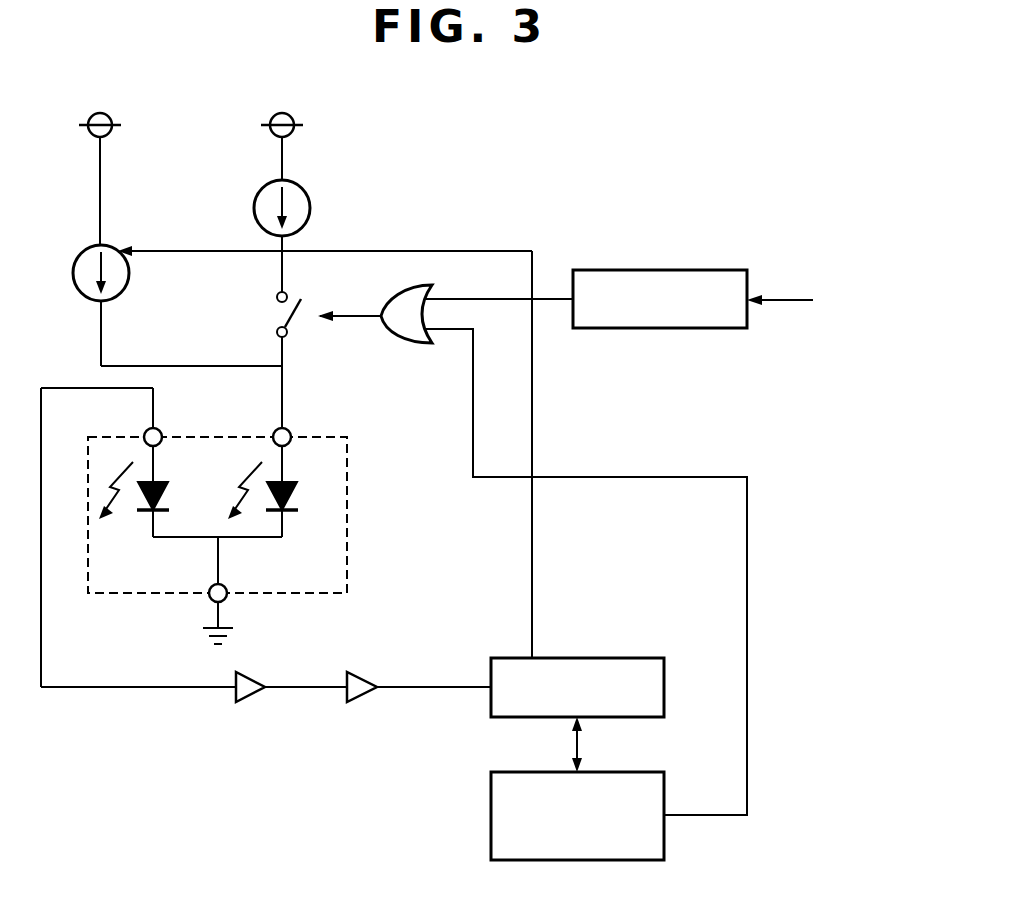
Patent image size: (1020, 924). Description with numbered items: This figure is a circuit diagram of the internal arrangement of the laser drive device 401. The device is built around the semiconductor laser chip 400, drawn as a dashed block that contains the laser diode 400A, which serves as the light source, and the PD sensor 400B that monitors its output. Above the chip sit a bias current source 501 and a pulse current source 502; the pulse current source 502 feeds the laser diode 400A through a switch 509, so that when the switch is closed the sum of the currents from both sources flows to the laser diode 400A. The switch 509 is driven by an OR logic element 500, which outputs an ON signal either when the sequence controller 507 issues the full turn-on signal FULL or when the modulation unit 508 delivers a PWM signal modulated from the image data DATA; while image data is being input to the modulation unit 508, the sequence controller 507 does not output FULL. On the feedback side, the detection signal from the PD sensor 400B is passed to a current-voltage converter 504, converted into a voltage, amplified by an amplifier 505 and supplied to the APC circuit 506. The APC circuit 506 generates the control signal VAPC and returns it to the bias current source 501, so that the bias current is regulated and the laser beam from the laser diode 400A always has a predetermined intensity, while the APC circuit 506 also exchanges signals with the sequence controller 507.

The laser drive device 401 is at (510, 123).
The bias current source 501 is at (112, 242).
The pulse current source 502 is at (305, 187).
The switch 509 is at (276, 297).
The OR logic element 500 is at (410, 343).
The modulation unit 508 is at (712, 270).
The semiconductor laser chip 400 is at (348, 543).
The laser diode 400A is at (298, 489).
The PD sensor 400B is at (137, 489).
The current-voltage converter 504 is at (250, 702).
The amplifier 505 is at (356, 672).
The APC circuit 506 is at (640, 658).
The sequence controller 507 is at (640, 772).